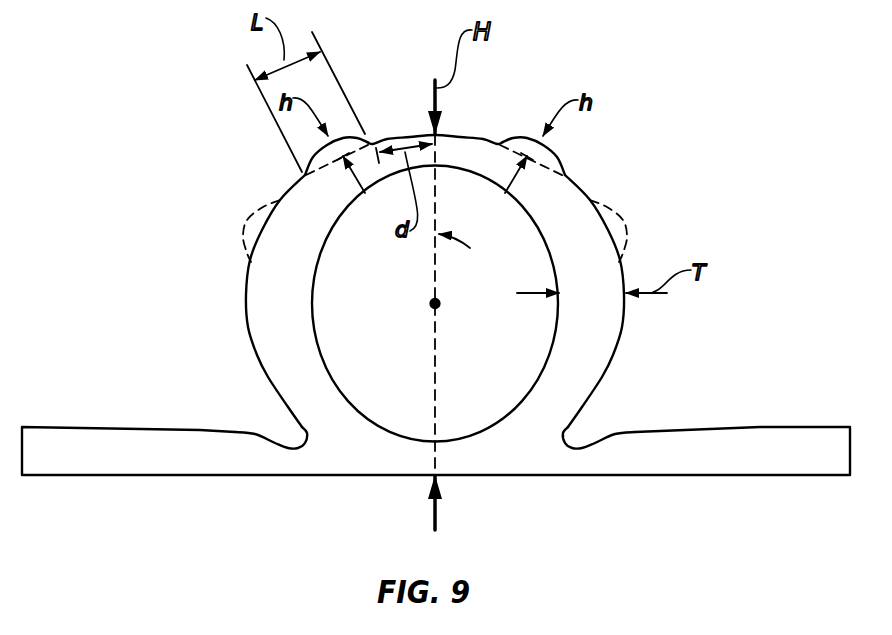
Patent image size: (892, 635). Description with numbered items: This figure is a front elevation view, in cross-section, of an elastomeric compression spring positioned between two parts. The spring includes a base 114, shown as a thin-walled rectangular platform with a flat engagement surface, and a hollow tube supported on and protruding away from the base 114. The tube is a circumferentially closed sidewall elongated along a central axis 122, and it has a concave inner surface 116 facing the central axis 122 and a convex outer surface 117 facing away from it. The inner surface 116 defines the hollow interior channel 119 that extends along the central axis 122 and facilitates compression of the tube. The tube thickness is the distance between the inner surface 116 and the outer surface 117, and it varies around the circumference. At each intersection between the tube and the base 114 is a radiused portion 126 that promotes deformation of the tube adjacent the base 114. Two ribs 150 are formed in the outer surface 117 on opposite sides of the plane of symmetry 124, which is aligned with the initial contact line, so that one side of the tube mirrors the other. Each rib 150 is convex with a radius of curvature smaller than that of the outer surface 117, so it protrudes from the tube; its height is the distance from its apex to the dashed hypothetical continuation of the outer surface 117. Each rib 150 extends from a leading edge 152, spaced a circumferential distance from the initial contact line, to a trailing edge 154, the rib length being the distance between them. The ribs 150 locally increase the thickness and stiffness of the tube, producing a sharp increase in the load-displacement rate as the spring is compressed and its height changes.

The base 114 is at (787, 426).
The inner surface 116 is at (435, 251).
The outer surface 117 is at (247, 302).
The hollow interior channel 119 is at (518, 364).
The central axis 122 is at (437, 302).
The plane of symmetry 124 is at (435, 350).
The radiused portion 126 is at (302, 438).
The rib 150 is at (344, 136).
The leading edge 152 is at (372, 143).
The trailing edge 154 is at (305, 177).